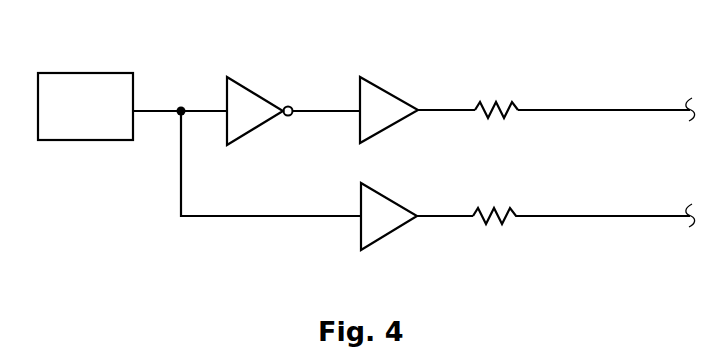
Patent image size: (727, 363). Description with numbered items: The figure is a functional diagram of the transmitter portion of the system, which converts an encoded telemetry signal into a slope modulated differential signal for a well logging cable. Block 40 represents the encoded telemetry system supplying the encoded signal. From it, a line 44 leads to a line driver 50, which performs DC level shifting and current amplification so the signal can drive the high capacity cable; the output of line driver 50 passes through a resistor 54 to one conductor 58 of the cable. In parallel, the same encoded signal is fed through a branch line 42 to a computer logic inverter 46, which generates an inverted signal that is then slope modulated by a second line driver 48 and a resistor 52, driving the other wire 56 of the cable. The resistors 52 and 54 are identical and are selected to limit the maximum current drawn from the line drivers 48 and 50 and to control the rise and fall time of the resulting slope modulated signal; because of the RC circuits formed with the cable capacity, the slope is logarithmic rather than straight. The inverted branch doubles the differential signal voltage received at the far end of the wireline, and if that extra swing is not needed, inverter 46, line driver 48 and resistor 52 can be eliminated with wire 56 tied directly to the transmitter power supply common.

The encoded telemetry system 40 is at (66, 73).
The branch line 42 is at (192, 110).
The line 44 is at (181, 197).
The computer logic inverter 46 is at (260, 93).
The line driver 48 is at (392, 91).
The line driver 50 is at (388, 193).
The resistor 52 is at (487, 102).
The resistor 54 is at (482, 207).
The wire 56 is at (596, 110).
The conductor 58 is at (605, 215).